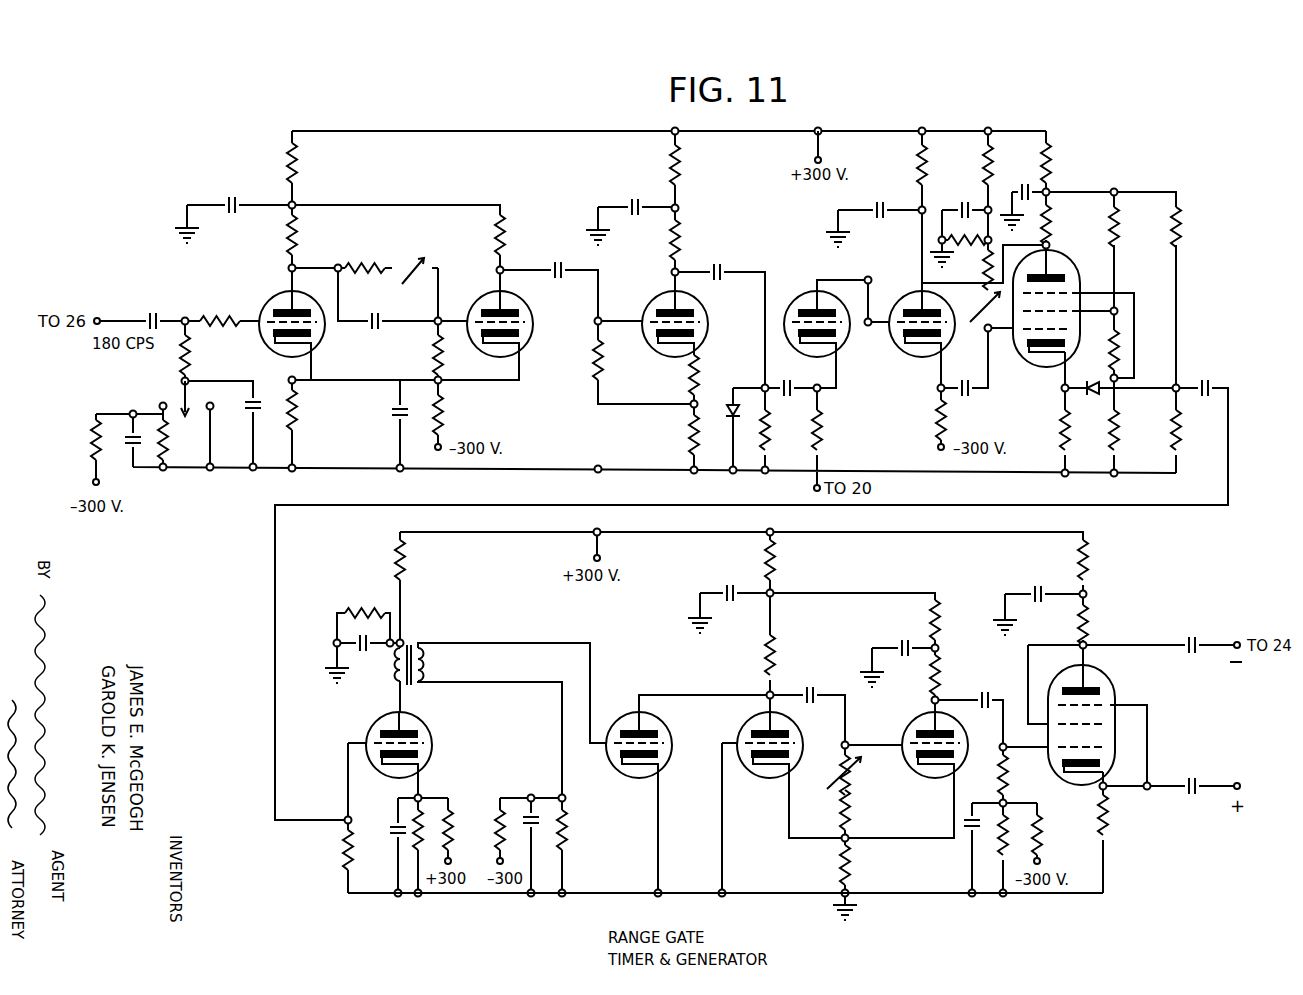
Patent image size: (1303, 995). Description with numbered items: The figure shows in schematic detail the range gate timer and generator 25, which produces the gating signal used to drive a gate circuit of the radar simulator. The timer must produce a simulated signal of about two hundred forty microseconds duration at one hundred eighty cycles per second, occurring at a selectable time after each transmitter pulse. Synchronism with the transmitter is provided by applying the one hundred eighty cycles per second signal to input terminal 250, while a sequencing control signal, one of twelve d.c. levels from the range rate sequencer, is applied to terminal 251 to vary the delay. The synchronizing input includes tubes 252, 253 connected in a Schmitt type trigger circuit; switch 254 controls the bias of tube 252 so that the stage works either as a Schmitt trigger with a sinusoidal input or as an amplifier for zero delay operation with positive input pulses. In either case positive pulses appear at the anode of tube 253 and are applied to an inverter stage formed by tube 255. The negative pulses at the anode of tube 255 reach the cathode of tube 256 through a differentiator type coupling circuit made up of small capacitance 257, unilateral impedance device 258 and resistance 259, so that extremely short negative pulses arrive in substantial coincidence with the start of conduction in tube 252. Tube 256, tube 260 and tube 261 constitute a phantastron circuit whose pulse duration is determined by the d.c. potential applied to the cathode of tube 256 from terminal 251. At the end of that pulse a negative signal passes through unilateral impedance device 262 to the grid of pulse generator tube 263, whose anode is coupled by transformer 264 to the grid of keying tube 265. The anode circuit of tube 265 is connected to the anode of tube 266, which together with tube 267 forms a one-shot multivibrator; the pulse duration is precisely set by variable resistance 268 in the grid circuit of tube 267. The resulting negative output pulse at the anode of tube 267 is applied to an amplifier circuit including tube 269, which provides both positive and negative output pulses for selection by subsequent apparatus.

The range gate timer and generator 25 is at (675, 924).
The input terminal 250 is at (99, 320).
The terminal 251 is at (812, 489).
The tube 252 is at (318, 343).
The tube 253 is at (527, 343).
The switch 254 is at (183, 408).
The tube 255 is at (702, 343).
The tube 256 is at (838, 352).
The small capacitance 257 is at (722, 265).
The unilateral impedance device 258 is at (730, 405).
The resistance 259 is at (782, 430).
The tube 260 is at (930, 357).
The tube 261 is at (1047, 367).
The unilateral impedance device 262 is at (1090, 396).
The pulse generator tube 263 is at (425, 765).
The transformer 264 is at (414, 644).
The keying tube 265 is at (663, 772).
The tube 266 is at (775, 778).
The tube 267 is at (909, 768).
The variable resistance 268 is at (850, 782).
The tube 269 is at (1110, 676).